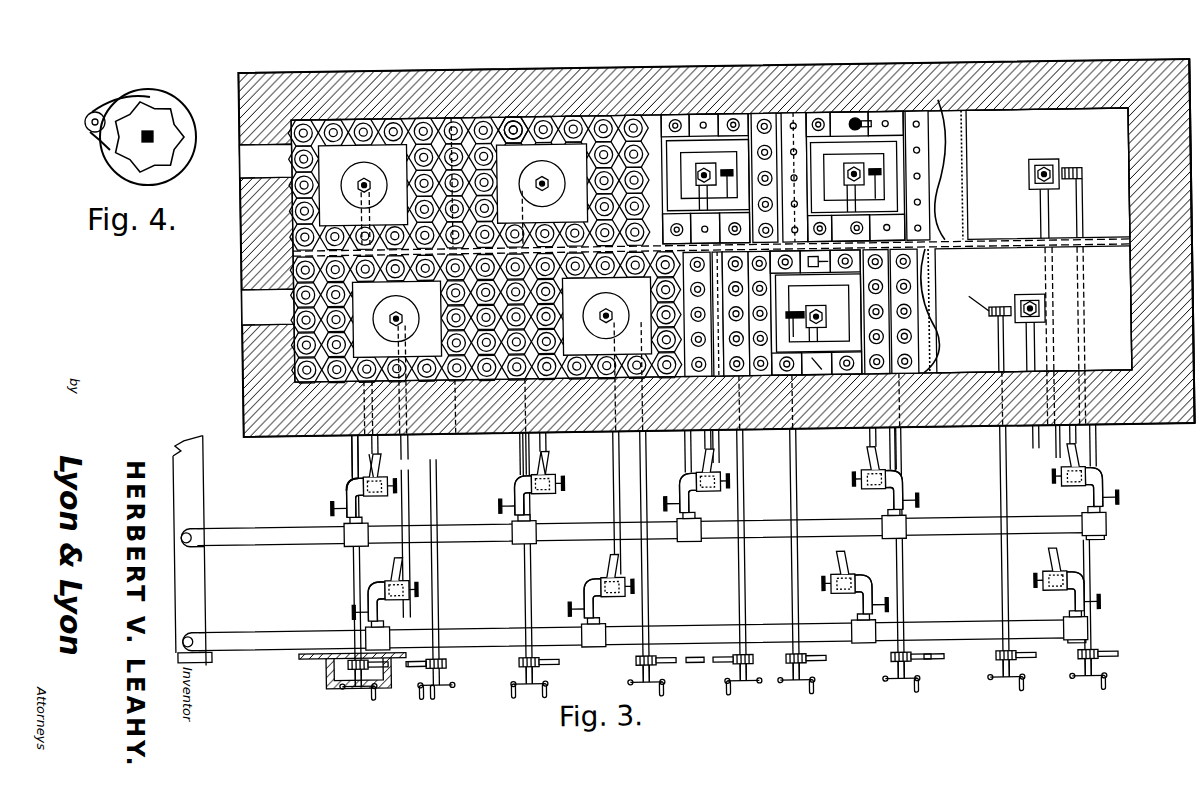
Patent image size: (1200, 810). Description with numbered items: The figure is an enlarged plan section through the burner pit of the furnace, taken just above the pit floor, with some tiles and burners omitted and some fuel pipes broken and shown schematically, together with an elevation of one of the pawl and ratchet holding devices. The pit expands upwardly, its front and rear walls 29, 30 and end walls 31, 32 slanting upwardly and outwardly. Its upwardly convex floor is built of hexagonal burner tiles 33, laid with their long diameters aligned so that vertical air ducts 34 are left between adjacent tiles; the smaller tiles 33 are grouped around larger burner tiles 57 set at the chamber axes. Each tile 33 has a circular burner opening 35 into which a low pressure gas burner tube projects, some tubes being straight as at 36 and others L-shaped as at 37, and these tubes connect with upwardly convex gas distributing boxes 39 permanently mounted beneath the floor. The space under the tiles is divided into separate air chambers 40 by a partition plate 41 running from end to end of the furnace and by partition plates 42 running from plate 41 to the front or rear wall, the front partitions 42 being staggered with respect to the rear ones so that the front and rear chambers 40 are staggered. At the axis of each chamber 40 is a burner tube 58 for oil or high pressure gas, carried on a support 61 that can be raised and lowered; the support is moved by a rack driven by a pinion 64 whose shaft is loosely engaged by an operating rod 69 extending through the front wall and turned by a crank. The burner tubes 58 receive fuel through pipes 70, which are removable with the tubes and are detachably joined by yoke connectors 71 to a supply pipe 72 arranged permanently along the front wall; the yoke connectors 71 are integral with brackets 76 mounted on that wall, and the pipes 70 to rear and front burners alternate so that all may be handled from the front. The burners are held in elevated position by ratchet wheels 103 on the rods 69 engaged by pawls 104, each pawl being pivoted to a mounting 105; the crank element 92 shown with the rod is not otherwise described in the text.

In FIG. 3, the front wall of pit 29 is at (910, 412).
In FIG. 3, the rear wall of pit 30 is at (793, 121).
In FIG. 3, the end wall of pit 31 is at (241, 255).
In FIG. 3, the end wall of pit 32 is at (1162, 436).
In FIG. 3, the burner tile 33 is at (485, 122).
In FIG. 3, the vertical air duct 34 is at (415, 133).
In FIG. 3, the circular burner opening 35 is at (524, 125).
In FIG. 3, the straight burner tube 36 is at (915, 122).
In FIG. 3, the L-shaped burner tube 37 is at (858, 125).
In FIG. 3, the gas distributing box 39 is at (720, 123).
In FIG. 3, the air chamber 40 is at (805, 172).
In FIG. 3, the partition plate 41 is at (985, 257).
In FIG. 3, the partition plate 42 is at (965, 170).
In FIG. 3, the larger burner tile 57 is at (337, 158).
In FIG. 3, the burner tube 58 is at (365, 182).
In FIG. 3, the support 61 is at (1030, 192).
In FIG. 3, the pinion 64 is at (1083, 185).
In FIG. 3, the operating rod 69 is at (347, 570).
In FIG. 4, the operating rod 69 is at (150, 128).
In FIG. 3, the fuel pipe 70 is at (608, 465).
In FIG. 3, the yoke connector 71 is at (398, 518).
In FIG. 3, the supply pipe 72 is at (248, 528).
In FIG. 3, the bracket 76 is at (356, 474).
In FIG. 3, the handle 92 is at (507, 693).
In FIG. 3, the ratchet wheel 103 is at (440, 666).
In FIG. 4, the ratchet wheel 103 is at (172, 150).
In FIG. 3, the pawl 104 is at (325, 668).
In FIG. 4, the pawl 104 is at (90, 114).
In FIG. 3, the mounting 105 is at (374, 678).
In FIG. 4, the mounting 105 is at (140, 92).